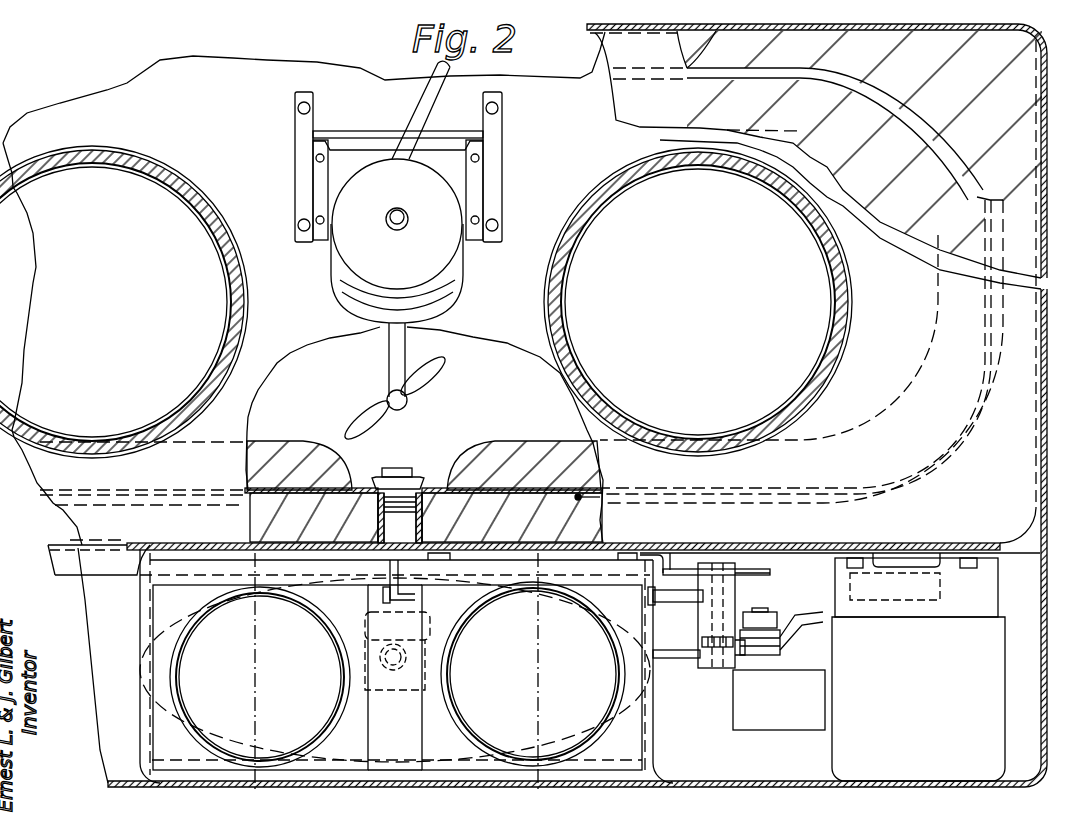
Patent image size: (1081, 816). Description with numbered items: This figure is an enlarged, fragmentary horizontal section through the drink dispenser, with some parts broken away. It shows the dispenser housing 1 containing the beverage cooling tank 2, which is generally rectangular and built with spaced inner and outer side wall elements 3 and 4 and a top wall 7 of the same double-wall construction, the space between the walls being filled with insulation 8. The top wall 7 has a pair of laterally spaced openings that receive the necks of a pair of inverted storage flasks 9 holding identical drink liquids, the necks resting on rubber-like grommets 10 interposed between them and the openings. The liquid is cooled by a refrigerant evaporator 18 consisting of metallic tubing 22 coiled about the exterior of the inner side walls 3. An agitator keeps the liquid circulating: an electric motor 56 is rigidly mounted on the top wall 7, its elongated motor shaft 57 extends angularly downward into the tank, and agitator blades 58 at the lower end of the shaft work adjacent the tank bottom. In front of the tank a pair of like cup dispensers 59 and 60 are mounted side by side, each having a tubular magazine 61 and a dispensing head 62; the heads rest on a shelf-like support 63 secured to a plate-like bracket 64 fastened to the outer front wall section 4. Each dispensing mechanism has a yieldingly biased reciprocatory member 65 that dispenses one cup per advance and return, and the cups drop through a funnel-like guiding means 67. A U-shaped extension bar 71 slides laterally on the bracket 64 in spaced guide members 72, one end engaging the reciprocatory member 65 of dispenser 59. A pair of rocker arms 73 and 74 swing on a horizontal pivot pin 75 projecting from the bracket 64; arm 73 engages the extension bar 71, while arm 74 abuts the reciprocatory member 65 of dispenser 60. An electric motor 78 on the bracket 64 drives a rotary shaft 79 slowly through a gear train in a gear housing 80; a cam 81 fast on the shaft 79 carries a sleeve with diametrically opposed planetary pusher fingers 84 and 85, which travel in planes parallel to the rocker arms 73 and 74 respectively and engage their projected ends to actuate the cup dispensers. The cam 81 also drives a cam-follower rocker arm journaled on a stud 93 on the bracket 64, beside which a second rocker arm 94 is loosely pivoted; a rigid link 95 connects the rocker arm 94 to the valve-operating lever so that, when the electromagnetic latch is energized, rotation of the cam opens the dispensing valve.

The dispenser housing 1 is at (584, 27).
The cooling tank 2 is at (1018, 462).
The inner side wall element 3 is at (689, 75).
The outer side wall element 4 is at (687, 68).
The top wall 7 is at (566, 165).
The insulation 8 is at (1018, 88).
The storage flasks 9 is at (58, 447).
The rubber-like grommets 10 is at (162, 165).
The refrigerant evaporator 18 is at (955, 166).
The metallic tubing 22 is at (893, 100).
The electric motor 56 is at (411, 264).
The motor shaft 57 is at (390, 357).
The agitator blades 58 is at (427, 376).
The cup dispenser 59 is at (194, 716).
The cup dispenser 60 is at (612, 673).
The tubular magazine 61 is at (184, 655).
The dispensing head 62 is at (360, 756).
The shelf-like support 63 is at (411, 747).
The plate-like bracket 64 is at (86, 558).
The reciprocatory member 65 is at (382, 596).
The funnel-like guiding means 67 is at (167, 732).
The extension bar 71 is at (486, 555).
The guide members 72 is at (443, 563).
The rocker arm 73 is at (700, 562).
The rocker arm 74 is at (683, 604).
The pivot pin 75 is at (675, 552).
The electric motor 78 is at (944, 703).
The rotary shaft 79 is at (760, 613).
The gear housing 80 is at (779, 700).
The cam 81 is at (777, 624).
The planetary pusher finger 84 is at (757, 573).
The planetary pusher finger 85 is at (740, 560).
The stud 93 is at (714, 650).
The rocker arm 94 is at (726, 660).
The rigid link 95 is at (674, 660).